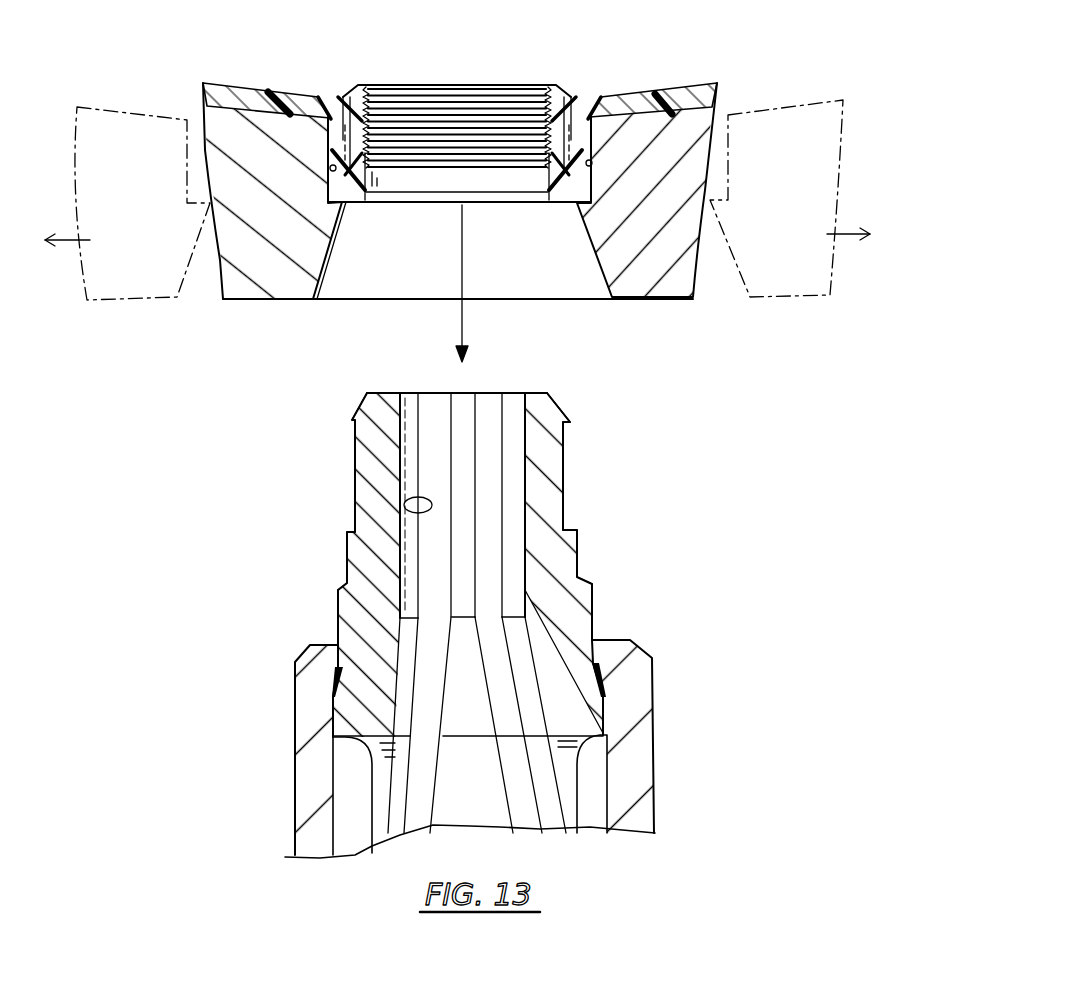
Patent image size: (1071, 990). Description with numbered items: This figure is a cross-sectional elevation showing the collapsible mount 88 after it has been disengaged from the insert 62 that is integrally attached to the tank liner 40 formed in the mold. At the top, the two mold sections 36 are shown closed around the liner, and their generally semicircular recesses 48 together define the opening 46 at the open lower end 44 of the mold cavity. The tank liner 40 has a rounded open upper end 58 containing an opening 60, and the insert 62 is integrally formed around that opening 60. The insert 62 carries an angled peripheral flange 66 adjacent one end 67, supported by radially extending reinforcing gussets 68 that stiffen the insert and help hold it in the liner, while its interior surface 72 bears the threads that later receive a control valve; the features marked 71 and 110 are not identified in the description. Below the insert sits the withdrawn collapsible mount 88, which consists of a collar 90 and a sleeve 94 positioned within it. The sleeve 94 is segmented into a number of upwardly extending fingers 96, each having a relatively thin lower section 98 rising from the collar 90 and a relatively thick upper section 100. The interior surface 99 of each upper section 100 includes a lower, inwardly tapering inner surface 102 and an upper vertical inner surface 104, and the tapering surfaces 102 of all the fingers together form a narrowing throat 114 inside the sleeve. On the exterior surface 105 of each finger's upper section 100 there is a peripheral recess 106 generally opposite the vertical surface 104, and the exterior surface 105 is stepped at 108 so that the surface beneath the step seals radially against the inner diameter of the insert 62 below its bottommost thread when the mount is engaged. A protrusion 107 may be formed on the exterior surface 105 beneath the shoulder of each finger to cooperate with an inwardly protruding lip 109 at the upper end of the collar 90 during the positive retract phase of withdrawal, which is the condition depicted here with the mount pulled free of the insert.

The mold sections 36 is at (247, 300).
The tank liner 40 is at (663, 95).
The open lower end 44 is at (372, 303).
The opening 46 is at (325, 298).
The semicircular recesses 48 is at (331, 170).
The open upper end 58 is at (292, 64).
The opening 60 is at (497, 196).
The insert 62 is at (528, 78).
The angled peripheral flange 66 is at (588, 98).
The end of insert 67 is at (348, 86).
The reinforcing gussets 68 is at (565, 92).
The step 71 is at (549, 172).
The interior surface 72 is at (372, 108).
The collapsible mount 88 is at (655, 613).
The collar 90 is at (655, 810).
The sleeve 94 is at (606, 675).
The fingers 96 is at (338, 570).
The lower section 98 is at (373, 783).
The interior surface 99 is at (404, 504).
The upper section 100 is at (332, 663).
The inwardly tapering inner surface 102 is at (395, 695).
The upper vertical inner surface 104 is at (404, 412).
The exterior surface 105 is at (338, 617).
The peripheral recess 106 is at (355, 470).
The protrusion 107 is at (605, 718).
The step 108 is at (347, 532).
The inwardly protruding lip 109 is at (322, 652).
The chamfer 110 is at (352, 420).
The narrowing throat 114 is at (488, 705).